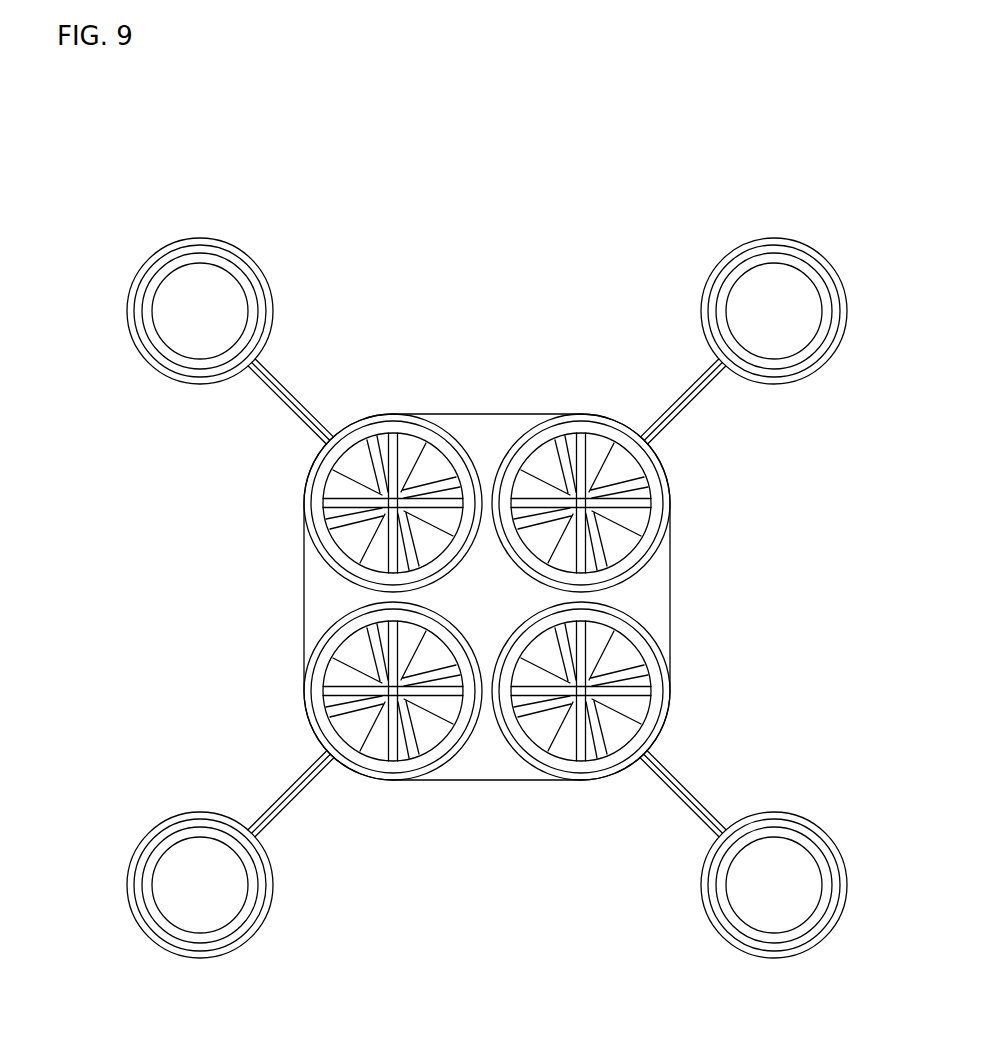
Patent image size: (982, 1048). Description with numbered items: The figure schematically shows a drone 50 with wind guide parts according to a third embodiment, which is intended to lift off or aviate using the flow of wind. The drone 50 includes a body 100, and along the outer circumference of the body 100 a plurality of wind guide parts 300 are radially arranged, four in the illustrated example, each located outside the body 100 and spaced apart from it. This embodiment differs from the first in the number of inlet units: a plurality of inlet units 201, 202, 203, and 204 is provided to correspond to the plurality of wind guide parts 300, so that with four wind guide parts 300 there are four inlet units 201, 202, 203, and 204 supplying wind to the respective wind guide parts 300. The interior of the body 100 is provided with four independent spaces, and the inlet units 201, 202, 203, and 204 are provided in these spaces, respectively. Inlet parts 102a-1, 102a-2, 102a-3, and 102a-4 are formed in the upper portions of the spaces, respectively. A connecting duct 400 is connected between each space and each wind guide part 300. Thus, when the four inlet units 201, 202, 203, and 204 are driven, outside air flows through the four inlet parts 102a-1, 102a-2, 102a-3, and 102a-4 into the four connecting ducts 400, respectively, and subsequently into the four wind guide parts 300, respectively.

The drone 50 is at (197, 121).
The body 100 is at (493, 418).
The inlet part 102a-1 is at (313, 515).
The inlet part 102a-2 is at (658, 525).
The inlet part 102a-3 is at (313, 690).
The inlet part 102a-4 is at (660, 690).
The inlet unit 201 is at (352, 472).
The inlet unit 202 is at (620, 472).
The inlet unit 203 is at (360, 725).
The inlet unit 204 is at (608, 730).
The wind guide part 300 is at (224, 242).
The connecting duct 400 is at (298, 393).